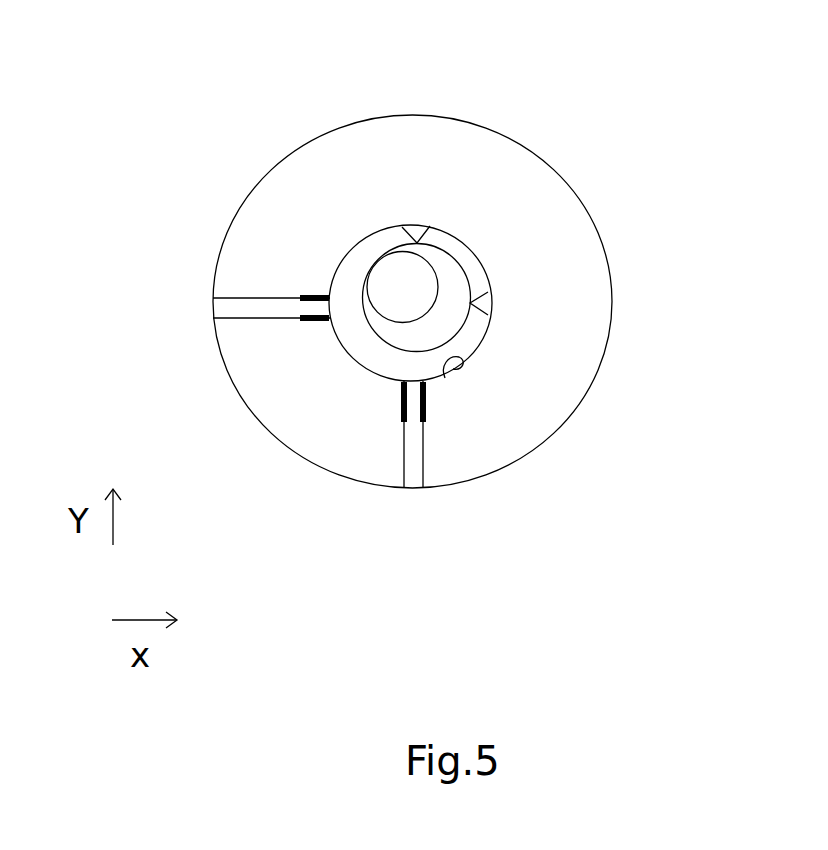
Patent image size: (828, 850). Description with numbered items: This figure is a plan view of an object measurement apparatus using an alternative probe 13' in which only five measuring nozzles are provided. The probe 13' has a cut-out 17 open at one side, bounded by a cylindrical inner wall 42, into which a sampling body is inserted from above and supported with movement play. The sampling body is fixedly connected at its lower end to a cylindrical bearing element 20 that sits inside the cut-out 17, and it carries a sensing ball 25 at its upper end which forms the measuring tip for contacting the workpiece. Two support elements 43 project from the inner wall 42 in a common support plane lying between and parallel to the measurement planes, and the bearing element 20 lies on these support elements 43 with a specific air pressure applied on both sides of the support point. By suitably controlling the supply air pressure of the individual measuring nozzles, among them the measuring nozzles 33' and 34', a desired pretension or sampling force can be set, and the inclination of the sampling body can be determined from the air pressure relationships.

The probe 13' is at (412, 333).
The cut-out 17 is at (373, 250).
The bearing element 20 is at (443, 320).
The sensing ball 25 is at (413, 283).
The measuring nozzle 33' is at (245, 207).
The measuring nozzle 34' is at (472, 484).
The inner wall 42 is at (445, 378).
The support elements 43 is at (417, 242).